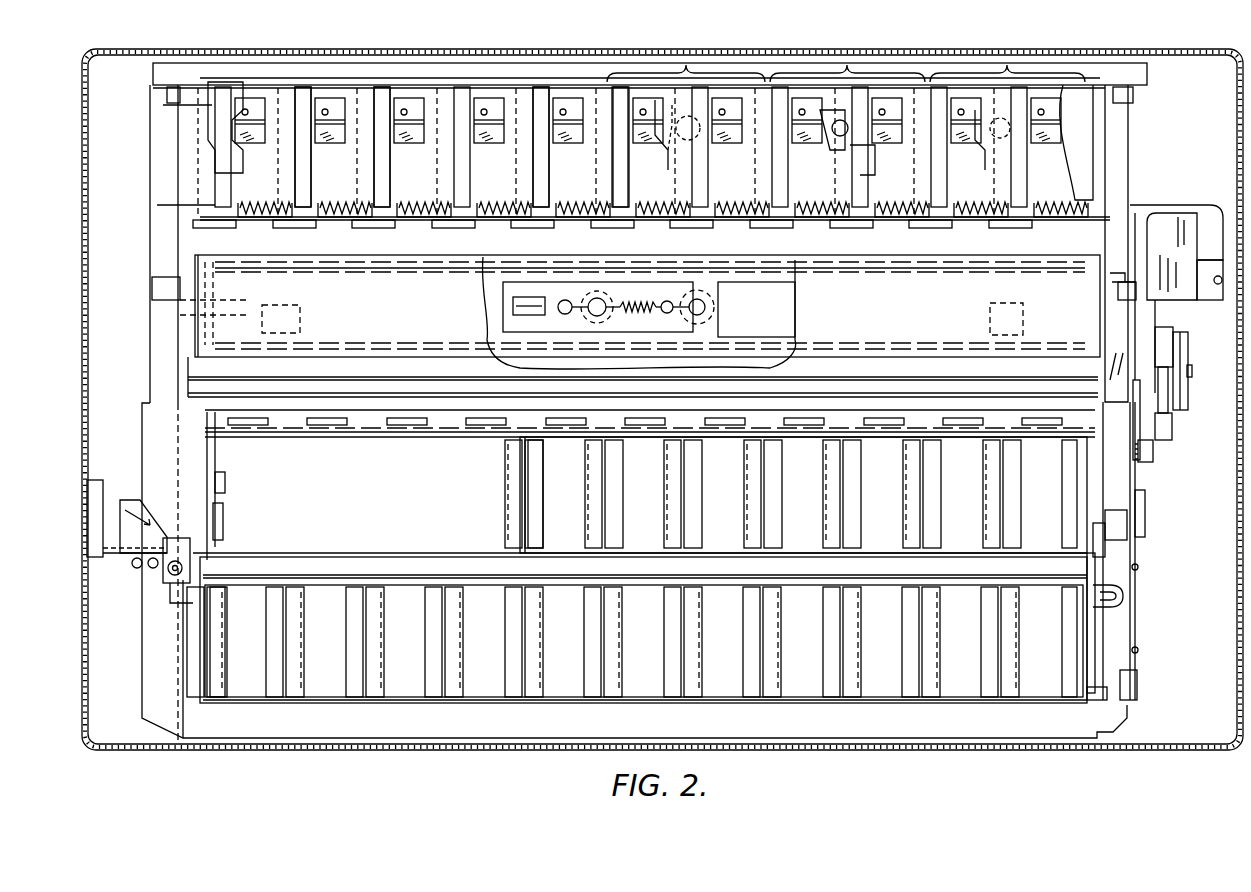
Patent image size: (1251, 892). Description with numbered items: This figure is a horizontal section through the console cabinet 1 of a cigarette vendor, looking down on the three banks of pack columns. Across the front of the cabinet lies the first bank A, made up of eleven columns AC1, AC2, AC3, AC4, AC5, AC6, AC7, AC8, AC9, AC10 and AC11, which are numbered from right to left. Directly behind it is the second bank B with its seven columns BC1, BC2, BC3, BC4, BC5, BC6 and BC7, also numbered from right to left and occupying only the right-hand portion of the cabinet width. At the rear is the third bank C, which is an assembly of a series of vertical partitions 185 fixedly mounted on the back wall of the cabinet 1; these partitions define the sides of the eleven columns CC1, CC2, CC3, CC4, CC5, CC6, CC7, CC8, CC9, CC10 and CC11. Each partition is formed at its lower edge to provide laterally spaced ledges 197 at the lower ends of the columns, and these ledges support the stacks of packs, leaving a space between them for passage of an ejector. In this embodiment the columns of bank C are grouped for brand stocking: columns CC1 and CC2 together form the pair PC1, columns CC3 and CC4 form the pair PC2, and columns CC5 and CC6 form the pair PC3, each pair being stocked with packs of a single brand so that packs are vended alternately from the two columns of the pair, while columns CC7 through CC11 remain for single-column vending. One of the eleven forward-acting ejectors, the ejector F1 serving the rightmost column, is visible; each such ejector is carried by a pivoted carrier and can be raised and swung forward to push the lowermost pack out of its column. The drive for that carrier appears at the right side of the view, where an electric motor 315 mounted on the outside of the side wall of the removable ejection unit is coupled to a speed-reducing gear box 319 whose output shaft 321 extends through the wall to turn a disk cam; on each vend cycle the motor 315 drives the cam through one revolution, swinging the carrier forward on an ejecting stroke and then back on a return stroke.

The console cabinet 1 is at (279, 752).
The third bank C is at (190, 150).
The pair of columns PC1 is at (1007, 57).
The pair of columns PC2 is at (847, 58).
The pair of columns PC3 is at (686, 58).
The ejector F1 is at (1048, 112).
The vertical partitions 185 is at (297, 163).
The ledges 197 is at (438, 158).
The electric motor 315 is at (1170, 202).
The speed-reducing gear box 319 is at (1145, 314).
The output shaft 321 is at (1192, 372).
The second bank B is at (523, 492).
The first bank A is at (203, 648).
The column CC1 is at (1064, 194).
The column CC2 is at (984, 194).
The column CC3 is at (905, 194).
The column CC4 is at (825, 194).
The column CC5 is at (746, 194).
The column CC6 is at (666, 194).
The column CC7 is at (586, 194).
The column CC8 is at (507, 194).
The column CC9 is at (427, 194).
The column CC10 is at (349, 194).
The column CC11 is at (268, 194).
The column BC1 is at (1060, 513).
The column BC2 is at (980, 513).
The column BC3 is at (900, 513).
The column BC4 is at (821, 513).
The column BC5 is at (741, 513).
The column BC6 is at (662, 513).
The column BC7 is at (582, 513).
The column AC1 is at (1058, 652).
The column AC2 is at (979, 652).
The column AC3 is at (900, 652).
The column AC4 is at (820, 652).
The column AC5 is at (741, 652).
The column AC6 is at (661, 652).
The column AC7 is at (582, 652).
The column AC8 is at (502, 652).
The column AC9 is at (423, 652).
The column AC10 is at (343, 652).
The column AC11 is at (264, 652).